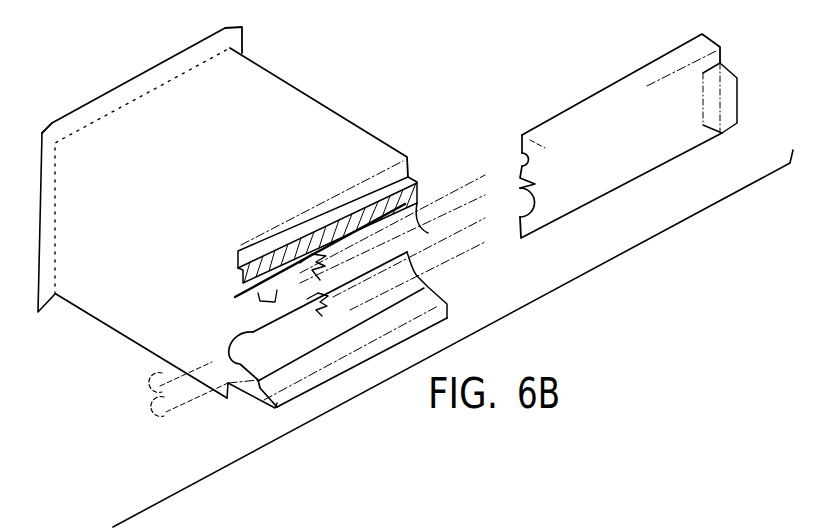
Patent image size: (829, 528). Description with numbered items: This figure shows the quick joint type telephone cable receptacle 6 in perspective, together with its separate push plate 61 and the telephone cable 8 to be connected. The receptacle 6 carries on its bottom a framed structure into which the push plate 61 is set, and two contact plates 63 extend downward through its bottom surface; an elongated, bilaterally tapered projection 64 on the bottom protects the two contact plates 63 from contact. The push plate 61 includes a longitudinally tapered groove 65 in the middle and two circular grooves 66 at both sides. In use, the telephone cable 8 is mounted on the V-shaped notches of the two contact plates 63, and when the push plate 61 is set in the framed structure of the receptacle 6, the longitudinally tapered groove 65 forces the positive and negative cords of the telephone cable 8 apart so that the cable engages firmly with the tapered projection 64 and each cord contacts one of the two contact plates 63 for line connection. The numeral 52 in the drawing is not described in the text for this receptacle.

The quick joint type telephone cable receptacle 6 is at (318, 112).
The telephone cable 8 is at (178, 405).
The bottom notch 52 is at (246, 392).
The push plate 61 is at (628, 136).
The contact plates 63 is at (331, 245).
The elongated, bilaterally tapered projection 64 is at (252, 328).
The longitudinally tapered groove 65 is at (519, 178).
The circular grooves 66 is at (519, 147).